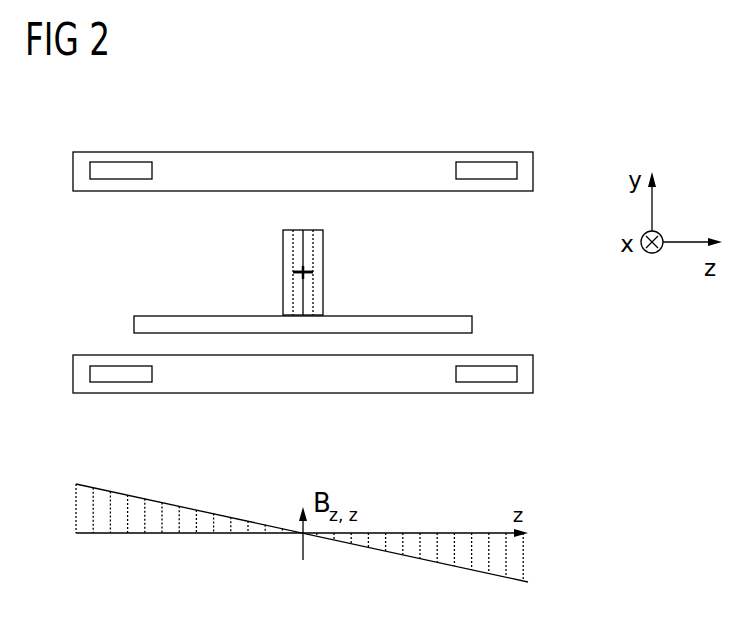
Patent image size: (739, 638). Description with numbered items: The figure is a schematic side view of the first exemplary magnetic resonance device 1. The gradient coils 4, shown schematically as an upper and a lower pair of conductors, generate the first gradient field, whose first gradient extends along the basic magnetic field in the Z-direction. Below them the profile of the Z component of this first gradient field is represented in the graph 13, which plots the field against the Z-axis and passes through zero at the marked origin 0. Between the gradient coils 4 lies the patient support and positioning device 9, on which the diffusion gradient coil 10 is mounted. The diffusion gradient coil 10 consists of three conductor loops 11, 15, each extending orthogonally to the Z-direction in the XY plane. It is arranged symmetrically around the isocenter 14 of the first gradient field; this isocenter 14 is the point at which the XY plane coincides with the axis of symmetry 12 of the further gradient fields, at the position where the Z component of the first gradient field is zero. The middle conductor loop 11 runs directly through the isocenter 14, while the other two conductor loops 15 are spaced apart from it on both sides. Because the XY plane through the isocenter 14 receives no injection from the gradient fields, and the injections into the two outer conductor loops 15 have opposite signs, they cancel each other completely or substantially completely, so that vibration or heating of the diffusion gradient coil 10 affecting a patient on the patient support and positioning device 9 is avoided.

The magnetic resonance device 1 is at (443, 106).
The gradient coils 4 is at (122, 162).
The patient support and positioning device 9 is at (443, 316).
The diffusion gradient coil 10 is at (323, 252).
The middle conductor loop 11 is at (305, 300).
The axis of symmetry 12 is at (302, 272).
The isocenter 14 is at (265, 272).
The conductor loops 15 is at (312, 230).
The graph 13 is at (153, 523).
The origin 0 is at (302, 538).